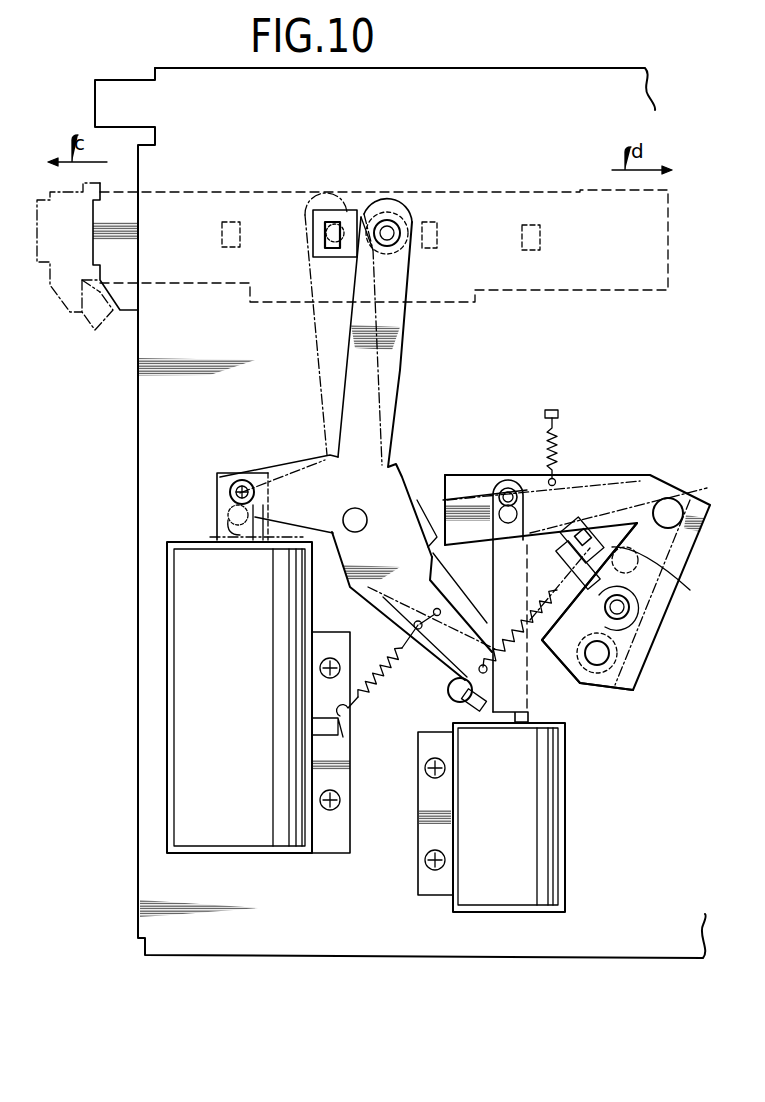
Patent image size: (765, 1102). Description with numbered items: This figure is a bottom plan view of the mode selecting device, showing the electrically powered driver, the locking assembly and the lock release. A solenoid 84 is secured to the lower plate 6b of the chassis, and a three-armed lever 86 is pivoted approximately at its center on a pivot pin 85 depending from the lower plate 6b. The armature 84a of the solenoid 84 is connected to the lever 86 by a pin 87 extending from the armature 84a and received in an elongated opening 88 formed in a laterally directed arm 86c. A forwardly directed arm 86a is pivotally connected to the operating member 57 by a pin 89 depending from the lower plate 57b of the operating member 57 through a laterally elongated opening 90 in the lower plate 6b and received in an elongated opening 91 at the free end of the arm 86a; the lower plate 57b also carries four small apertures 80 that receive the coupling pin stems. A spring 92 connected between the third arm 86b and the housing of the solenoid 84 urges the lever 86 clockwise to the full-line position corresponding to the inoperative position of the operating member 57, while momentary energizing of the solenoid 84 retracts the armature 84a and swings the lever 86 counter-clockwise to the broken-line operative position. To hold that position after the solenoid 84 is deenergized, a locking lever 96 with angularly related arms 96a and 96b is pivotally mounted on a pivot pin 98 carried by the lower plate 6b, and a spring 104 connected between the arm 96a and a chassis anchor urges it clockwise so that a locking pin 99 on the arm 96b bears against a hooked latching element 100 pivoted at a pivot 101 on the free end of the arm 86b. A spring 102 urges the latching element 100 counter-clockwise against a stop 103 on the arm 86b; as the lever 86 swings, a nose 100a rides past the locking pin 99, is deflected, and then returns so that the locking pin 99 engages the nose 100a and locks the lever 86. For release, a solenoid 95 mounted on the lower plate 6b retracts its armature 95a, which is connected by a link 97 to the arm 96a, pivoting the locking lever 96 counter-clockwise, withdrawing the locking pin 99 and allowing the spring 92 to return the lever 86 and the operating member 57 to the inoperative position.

The lower plate 6b is at (540, 85).
The operating member 57 is at (582, 291).
The lower plate 57b is at (97, 322).
The apertures 80 is at (228, 222).
The solenoid 84 is at (235, 836).
The armature 84a is at (228, 474).
The pivot pin 85 is at (367, 522).
The three-armed lever 86 is at (394, 378).
The forwardly directed arm 86a is at (402, 272).
The third arm 86b is at (493, 568).
The laterally directed arm 86c is at (272, 470).
The pin 87 is at (257, 496).
The elongated opening 88 is at (230, 495).
The pin 89 is at (373, 218).
The laterally elongated opening 90 is at (325, 212).
The elongated opening 91 is at (397, 222).
The spring 92 is at (398, 668).
The solenoid 95 is at (545, 858).
The armature 95a is at (530, 718).
The locking lever 96 is at (614, 492).
The arm 96a is at (466, 490).
The arm 96b is at (640, 630).
The link 97 is at (530, 533).
The pivot pin 98 is at (673, 500).
The locking pin 99 is at (605, 675).
The hooked latching element 100 is at (690, 590).
The nose 100a is at (585, 682).
The pivot 101 is at (629, 608).
The spring 102 is at (440, 614).
The stop 103 is at (555, 580).
The spring 104 is at (558, 430).